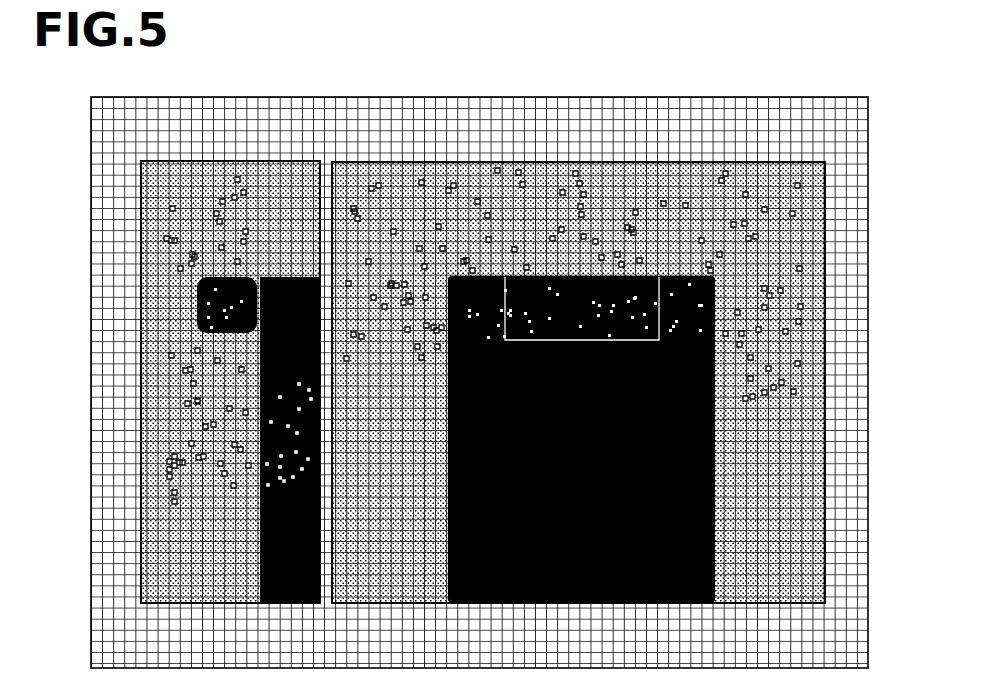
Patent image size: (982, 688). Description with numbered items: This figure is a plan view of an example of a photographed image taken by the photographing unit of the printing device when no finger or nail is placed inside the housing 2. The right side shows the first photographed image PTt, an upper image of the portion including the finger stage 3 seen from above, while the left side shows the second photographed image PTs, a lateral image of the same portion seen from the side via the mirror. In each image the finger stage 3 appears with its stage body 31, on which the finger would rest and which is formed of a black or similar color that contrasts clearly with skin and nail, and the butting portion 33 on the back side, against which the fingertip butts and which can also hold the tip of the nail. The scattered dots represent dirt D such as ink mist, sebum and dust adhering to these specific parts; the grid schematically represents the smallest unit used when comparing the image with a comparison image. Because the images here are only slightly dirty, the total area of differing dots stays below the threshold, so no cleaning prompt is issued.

The housing 2 is at (428, 527).
The finger stage 3 is at (183, 298).
The stage body 31 is at (272, 290).
The butting portion 33 is at (226, 293).
The dirt D is at (473, 271).
The second photographed image PTs is at (277, 147).
The first photographed image PTt is at (617, 150).